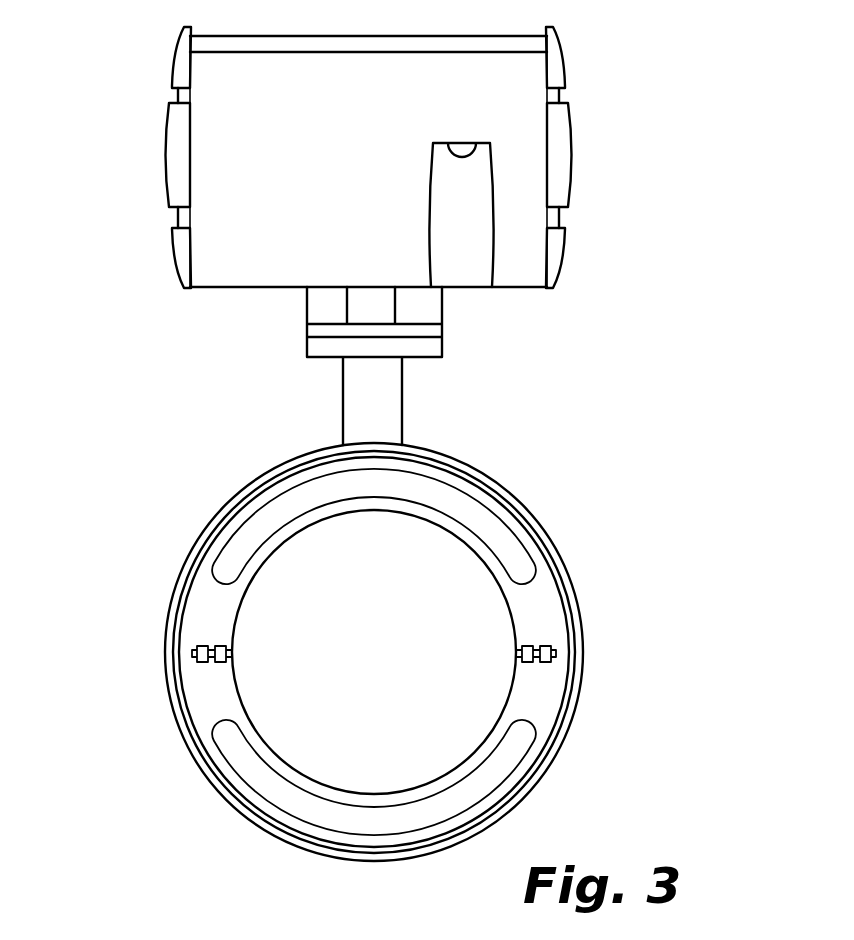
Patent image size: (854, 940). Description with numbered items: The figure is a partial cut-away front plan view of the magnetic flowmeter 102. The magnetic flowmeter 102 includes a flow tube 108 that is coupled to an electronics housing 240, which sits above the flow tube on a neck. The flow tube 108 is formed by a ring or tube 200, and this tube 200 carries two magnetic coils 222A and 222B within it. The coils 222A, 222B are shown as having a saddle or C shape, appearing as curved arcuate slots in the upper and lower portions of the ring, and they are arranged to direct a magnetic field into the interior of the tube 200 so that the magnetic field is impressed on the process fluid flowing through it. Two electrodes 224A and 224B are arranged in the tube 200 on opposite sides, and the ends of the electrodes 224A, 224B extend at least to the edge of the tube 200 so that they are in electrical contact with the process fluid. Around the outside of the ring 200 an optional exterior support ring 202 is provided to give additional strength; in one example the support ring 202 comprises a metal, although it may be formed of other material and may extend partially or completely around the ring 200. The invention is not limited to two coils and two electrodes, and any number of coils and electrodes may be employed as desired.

The magnetic flowmeter 102 is at (416, 236).
The flow tube 108 is at (380, 654).
The ring or tube 200 is at (560, 597).
The exterior support ring 202 is at (562, 720).
The magnetic coil 222A is at (257, 525).
The magnetic coil 222B is at (300, 815).
The electrode 224A is at (206, 648).
The electrode 224B is at (530, 648).
The electronics housing 240 is at (162, 220).